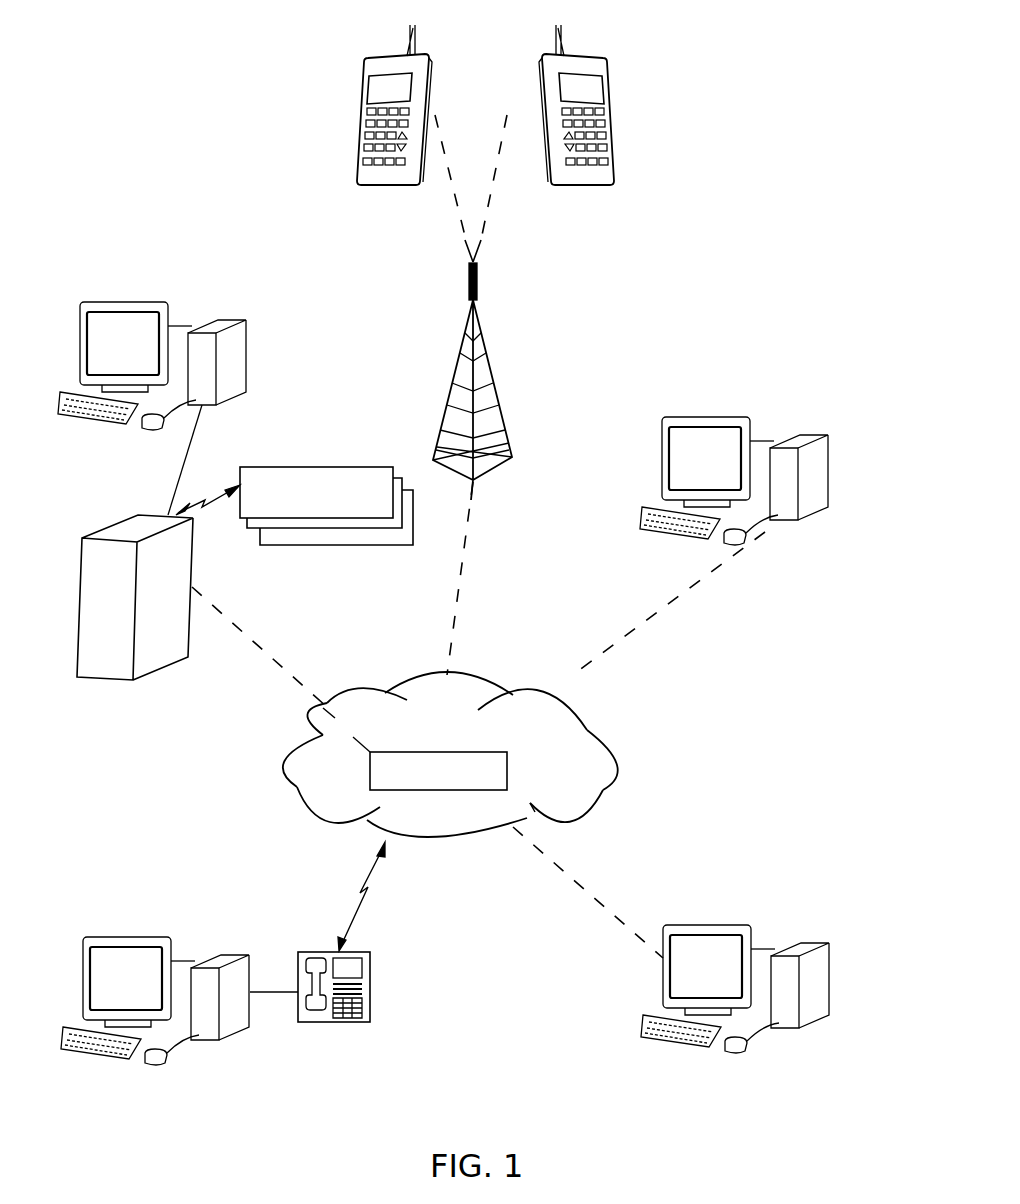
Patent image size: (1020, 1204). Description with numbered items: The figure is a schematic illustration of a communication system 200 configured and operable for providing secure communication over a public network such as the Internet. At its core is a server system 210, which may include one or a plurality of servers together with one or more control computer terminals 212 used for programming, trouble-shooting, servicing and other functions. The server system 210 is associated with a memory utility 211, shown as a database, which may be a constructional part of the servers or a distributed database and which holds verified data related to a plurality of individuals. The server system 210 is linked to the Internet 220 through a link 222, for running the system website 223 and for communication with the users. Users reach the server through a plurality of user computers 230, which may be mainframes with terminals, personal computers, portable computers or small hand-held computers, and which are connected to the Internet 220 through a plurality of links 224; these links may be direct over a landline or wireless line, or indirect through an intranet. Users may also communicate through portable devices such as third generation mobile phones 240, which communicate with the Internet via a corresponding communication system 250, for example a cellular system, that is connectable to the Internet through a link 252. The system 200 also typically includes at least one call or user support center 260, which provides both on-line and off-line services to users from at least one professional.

The communication system 200 is at (217, 127).
The server system 210 is at (115, 668).
The memory utility 211 is at (328, 473).
The control computer terminal 212 is at (127, 317).
The Internet 220 is at (587, 820).
The link 222 is at (270, 660).
The system website 223 is at (370, 772).
The links 224 is at (613, 645).
The user computers 230 is at (732, 403).
The mobile phones 240 is at (362, 125).
The communication system 250 is at (487, 388).
The link 252 is at (467, 541).
The call and/or user support center 260 is at (267, 1030).